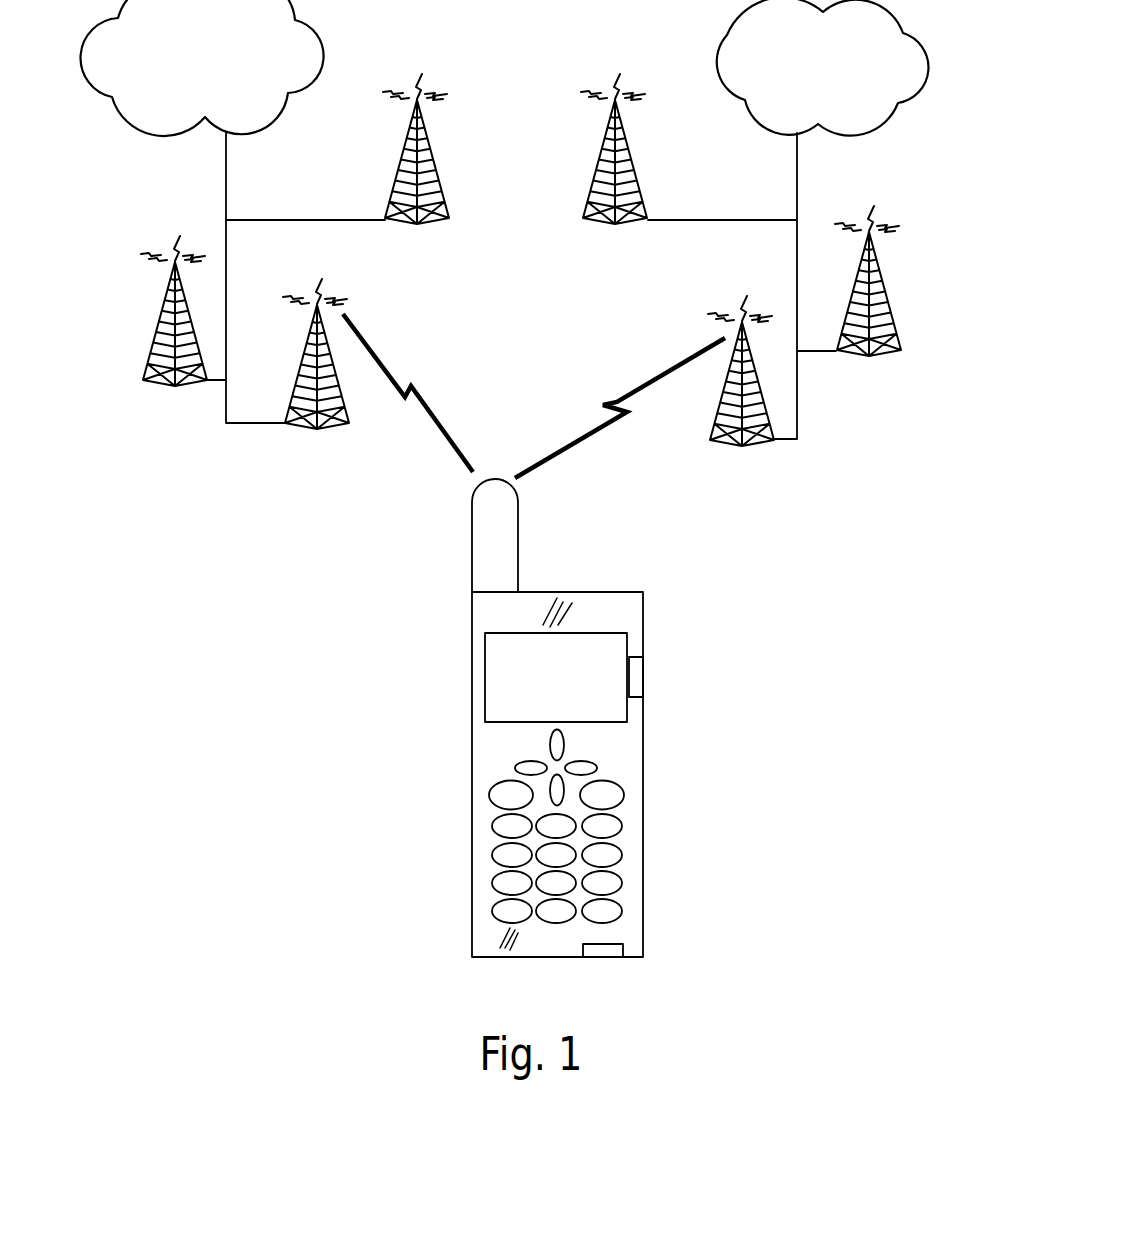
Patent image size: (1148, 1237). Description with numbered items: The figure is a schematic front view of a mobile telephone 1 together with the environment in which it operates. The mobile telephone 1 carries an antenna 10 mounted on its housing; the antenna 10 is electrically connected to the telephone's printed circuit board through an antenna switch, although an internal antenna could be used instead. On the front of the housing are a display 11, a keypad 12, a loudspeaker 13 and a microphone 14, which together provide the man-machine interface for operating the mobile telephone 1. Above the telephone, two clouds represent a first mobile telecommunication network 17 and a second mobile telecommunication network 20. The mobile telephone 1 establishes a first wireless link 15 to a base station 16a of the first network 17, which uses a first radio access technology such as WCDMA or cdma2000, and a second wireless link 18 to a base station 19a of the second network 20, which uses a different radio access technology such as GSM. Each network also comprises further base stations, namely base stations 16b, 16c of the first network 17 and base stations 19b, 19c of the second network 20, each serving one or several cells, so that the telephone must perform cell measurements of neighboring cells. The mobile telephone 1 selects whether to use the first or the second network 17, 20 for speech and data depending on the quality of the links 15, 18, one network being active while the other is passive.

The mobile telephone 1 is at (534, 718).
The antenna 10 is at (472, 530).
The display 11 is at (613, 672).
The keypad 12 is at (617, 790).
The loudspeaker 13 is at (567, 604).
The microphone 14 is at (500, 946).
The first wireless link 15 is at (388, 370).
The base station 16a is at (312, 433).
The base station 16b is at (167, 388).
The base station 16c is at (395, 165).
The first mobile telecommunication network 17 is at (332, 47).
The second wireless link 18 is at (615, 400).
The base station 19a is at (738, 458).
The base station 19b is at (872, 362).
The base station 19c is at (633, 167).
The second mobile telecommunication network 20 is at (723, 53).